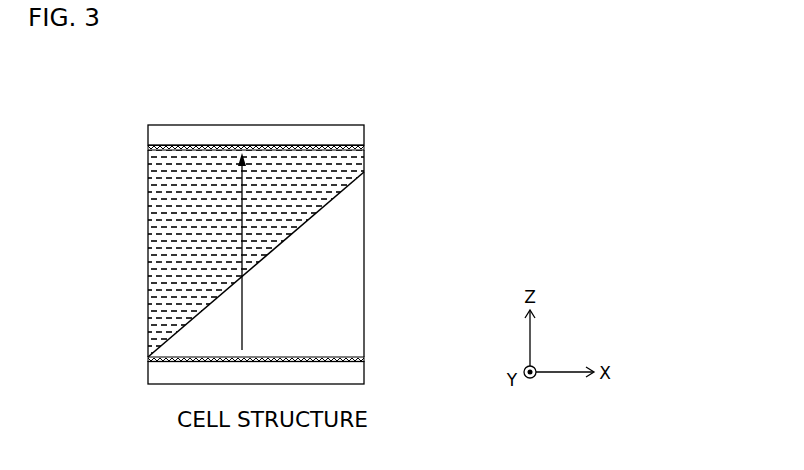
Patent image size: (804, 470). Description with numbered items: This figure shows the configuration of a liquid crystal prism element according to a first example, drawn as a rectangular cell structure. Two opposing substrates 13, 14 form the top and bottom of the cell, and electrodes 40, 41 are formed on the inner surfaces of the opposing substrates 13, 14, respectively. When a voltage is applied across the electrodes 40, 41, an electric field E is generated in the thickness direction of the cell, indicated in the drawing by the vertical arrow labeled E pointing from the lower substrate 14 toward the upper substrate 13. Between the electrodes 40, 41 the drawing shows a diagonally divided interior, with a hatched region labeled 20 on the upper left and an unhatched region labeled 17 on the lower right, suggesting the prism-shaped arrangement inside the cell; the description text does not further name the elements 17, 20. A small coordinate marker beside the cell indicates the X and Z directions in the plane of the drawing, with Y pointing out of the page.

The substrate 13 is at (351, 135).
The substrate 14 is at (350, 379).
The cell / spacer region 17 is at (350, 288).
The upper electrode 20 is at (350, 167).
The electrode 40 is at (182, 144).
The electrode 41 is at (169, 361).